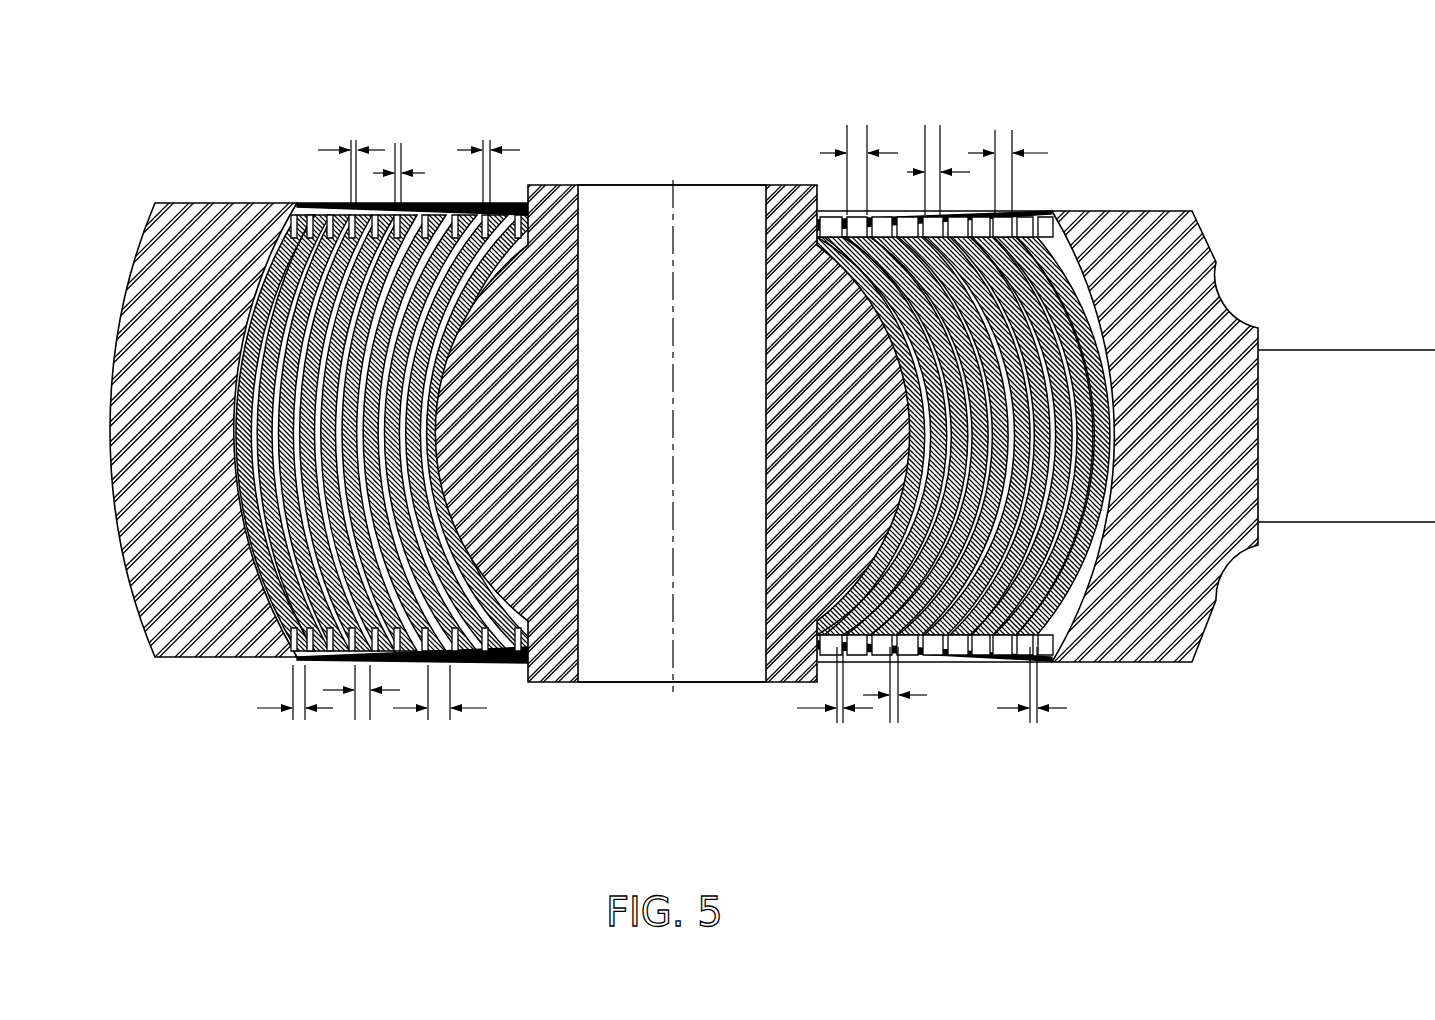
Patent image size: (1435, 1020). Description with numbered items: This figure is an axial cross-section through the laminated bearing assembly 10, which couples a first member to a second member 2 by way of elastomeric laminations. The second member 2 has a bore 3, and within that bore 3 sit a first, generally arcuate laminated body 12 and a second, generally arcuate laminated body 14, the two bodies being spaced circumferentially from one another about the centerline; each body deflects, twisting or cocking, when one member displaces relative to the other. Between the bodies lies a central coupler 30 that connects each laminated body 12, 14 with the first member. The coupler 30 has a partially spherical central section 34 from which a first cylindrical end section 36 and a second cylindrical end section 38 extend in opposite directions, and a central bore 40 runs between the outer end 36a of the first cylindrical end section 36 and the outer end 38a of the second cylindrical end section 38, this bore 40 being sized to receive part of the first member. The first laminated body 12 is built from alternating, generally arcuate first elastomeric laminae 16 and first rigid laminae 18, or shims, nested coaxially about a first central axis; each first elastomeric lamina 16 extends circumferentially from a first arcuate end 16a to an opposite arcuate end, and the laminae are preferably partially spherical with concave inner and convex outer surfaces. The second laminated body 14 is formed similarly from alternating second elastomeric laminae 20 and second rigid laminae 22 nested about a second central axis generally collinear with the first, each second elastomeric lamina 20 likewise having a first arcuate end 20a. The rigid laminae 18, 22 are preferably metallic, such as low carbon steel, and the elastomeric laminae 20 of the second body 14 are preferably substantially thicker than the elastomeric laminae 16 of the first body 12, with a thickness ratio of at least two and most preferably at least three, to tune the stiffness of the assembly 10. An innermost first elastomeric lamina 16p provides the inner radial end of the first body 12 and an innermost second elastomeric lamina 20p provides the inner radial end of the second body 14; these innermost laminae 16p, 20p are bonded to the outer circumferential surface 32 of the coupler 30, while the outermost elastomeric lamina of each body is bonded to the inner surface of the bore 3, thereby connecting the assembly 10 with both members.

The laminated bearing assembly 10 is at (410, 78).
The first laminated body 12 is at (392, 775).
The second laminated body 14 is at (926, 504).
The first elastomeric laminae 16 is at (293, 568).
The first arcuate end 16a is at (250, 554).
The innermost first elastomeric lamina 16p is at (520, 612).
The first rigid laminae 18 is at (538, 725).
The second elastomeric laminae 20 is at (1037, 618).
The first arcuate end 20a is at (1112, 237).
The innermost second elastomeric lamina 20p is at (818, 626).
The second rigid laminae 22 is at (818, 212).
The second member 2 is at (1200, 258).
The second member bore 3 is at (1092, 522).
The central coupler 30 is at (601, 156).
The outer circumferential surface 32 is at (442, 488).
The partially spherical central section 34 is at (533, 436).
The first cylindrical end section 36 is at (566, 186).
The outer end of first cylindrical end section 36a is at (707, 185).
The second cylindrical end section 38 is at (563, 686).
The outer end of second cylindrical end section 38a is at (645, 684).
The central bore 40 is at (580, 225).